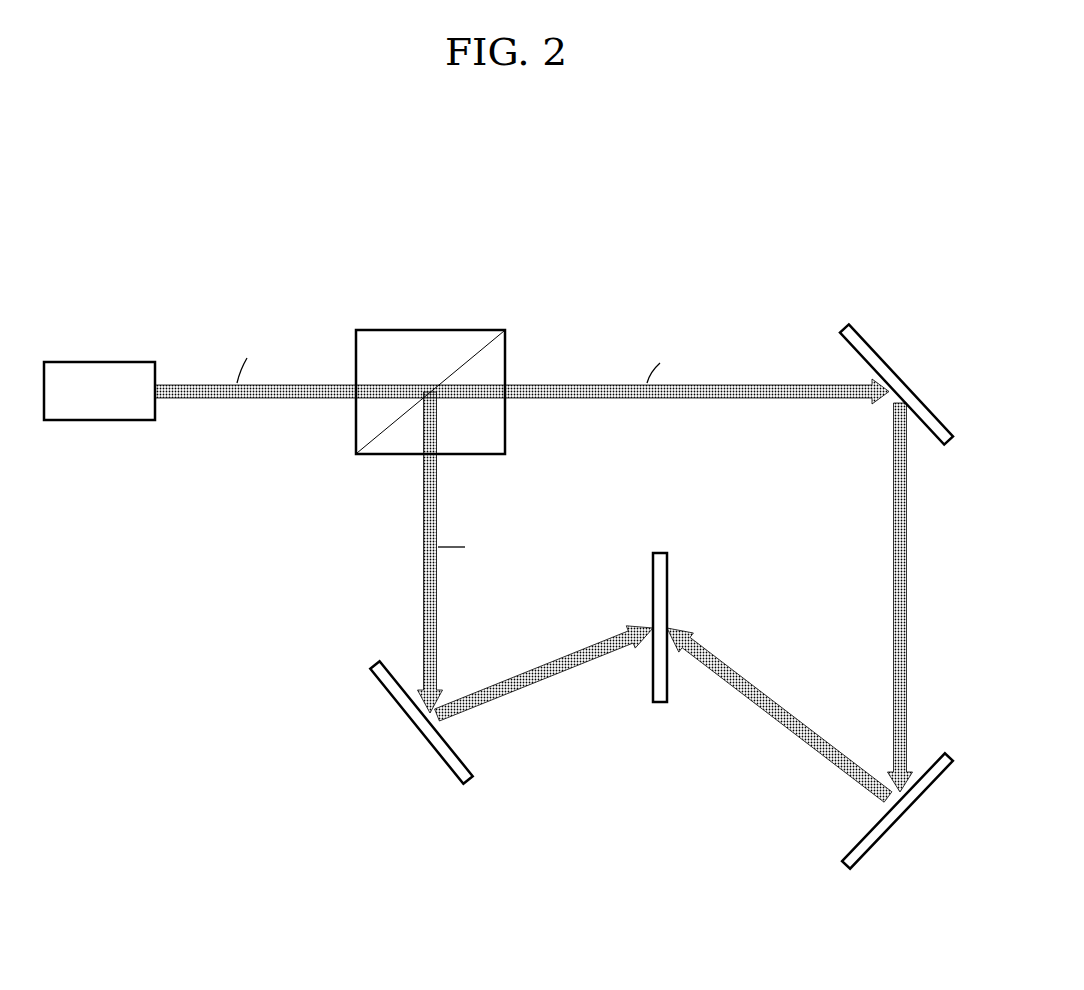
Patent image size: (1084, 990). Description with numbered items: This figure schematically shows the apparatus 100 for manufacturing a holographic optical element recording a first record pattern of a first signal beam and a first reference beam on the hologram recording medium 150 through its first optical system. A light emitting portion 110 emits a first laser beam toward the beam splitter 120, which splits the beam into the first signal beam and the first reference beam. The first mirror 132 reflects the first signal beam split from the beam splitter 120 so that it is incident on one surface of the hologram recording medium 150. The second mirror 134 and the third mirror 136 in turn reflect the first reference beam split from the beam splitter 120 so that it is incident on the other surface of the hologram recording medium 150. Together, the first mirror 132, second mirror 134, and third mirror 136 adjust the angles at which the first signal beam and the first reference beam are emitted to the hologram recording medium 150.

The apparatus for manufacturing a holographic optical element 100 is at (765, 245).
The light emitting portion 110 is at (115, 362).
The beam splitter 120 is at (393, 330).
The first mirror 132 is at (463, 767).
The second mirror 134 is at (900, 378).
The third mirror 136 is at (922, 795).
The hologram recording medium 150 is at (669, 581).